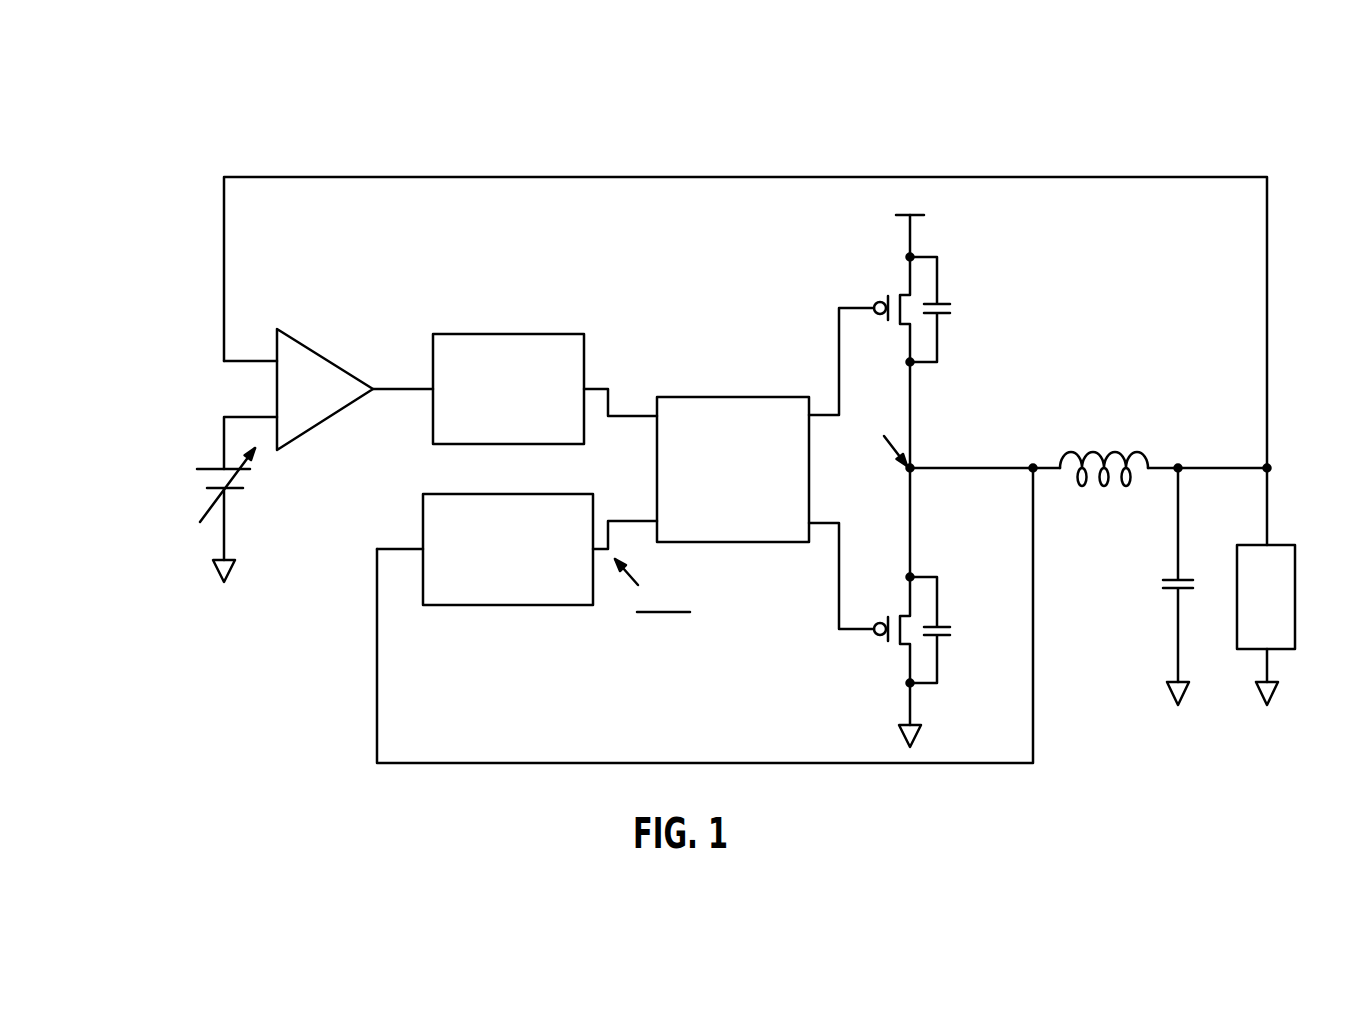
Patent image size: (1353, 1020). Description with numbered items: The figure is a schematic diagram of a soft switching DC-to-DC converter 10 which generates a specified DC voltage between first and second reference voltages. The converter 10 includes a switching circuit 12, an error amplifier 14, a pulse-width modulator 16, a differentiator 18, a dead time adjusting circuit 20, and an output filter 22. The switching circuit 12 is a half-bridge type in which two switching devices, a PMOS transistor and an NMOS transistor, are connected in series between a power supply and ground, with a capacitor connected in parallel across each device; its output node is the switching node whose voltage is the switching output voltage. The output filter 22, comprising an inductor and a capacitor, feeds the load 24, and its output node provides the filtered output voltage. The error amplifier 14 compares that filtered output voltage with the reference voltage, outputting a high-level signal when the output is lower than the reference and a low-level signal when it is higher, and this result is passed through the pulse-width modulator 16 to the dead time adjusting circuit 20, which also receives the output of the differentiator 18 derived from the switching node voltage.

The converter 10 is at (1158, 120).
The switching circuit 12 is at (967, 422).
The error amplifier 14 is at (320, 418).
The pulse-width modulator 16 is at (497, 334).
The differentiator 18 is at (495, 600).
The dead time adjusting circuit 20 is at (783, 537).
The output filter 22 is at (1173, 412).
The load 24 is at (1290, 632).